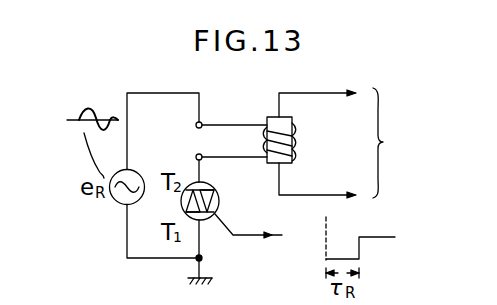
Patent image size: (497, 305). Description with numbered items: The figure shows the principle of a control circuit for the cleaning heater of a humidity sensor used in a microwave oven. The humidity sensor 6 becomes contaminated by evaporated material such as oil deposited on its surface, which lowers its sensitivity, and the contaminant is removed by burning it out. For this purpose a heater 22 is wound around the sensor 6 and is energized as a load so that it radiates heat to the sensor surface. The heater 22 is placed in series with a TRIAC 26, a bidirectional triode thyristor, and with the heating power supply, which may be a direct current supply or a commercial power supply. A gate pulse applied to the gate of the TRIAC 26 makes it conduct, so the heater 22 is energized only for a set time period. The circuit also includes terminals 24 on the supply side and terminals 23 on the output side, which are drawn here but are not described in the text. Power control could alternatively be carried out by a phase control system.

The humidity sensor 6 is at (272, 117).
The heater 22 is at (305, 143).
The output terminals 23 is at (383, 142).
The input terminals 24 is at (187, 130).
The TRIAC 26 is at (219, 196).